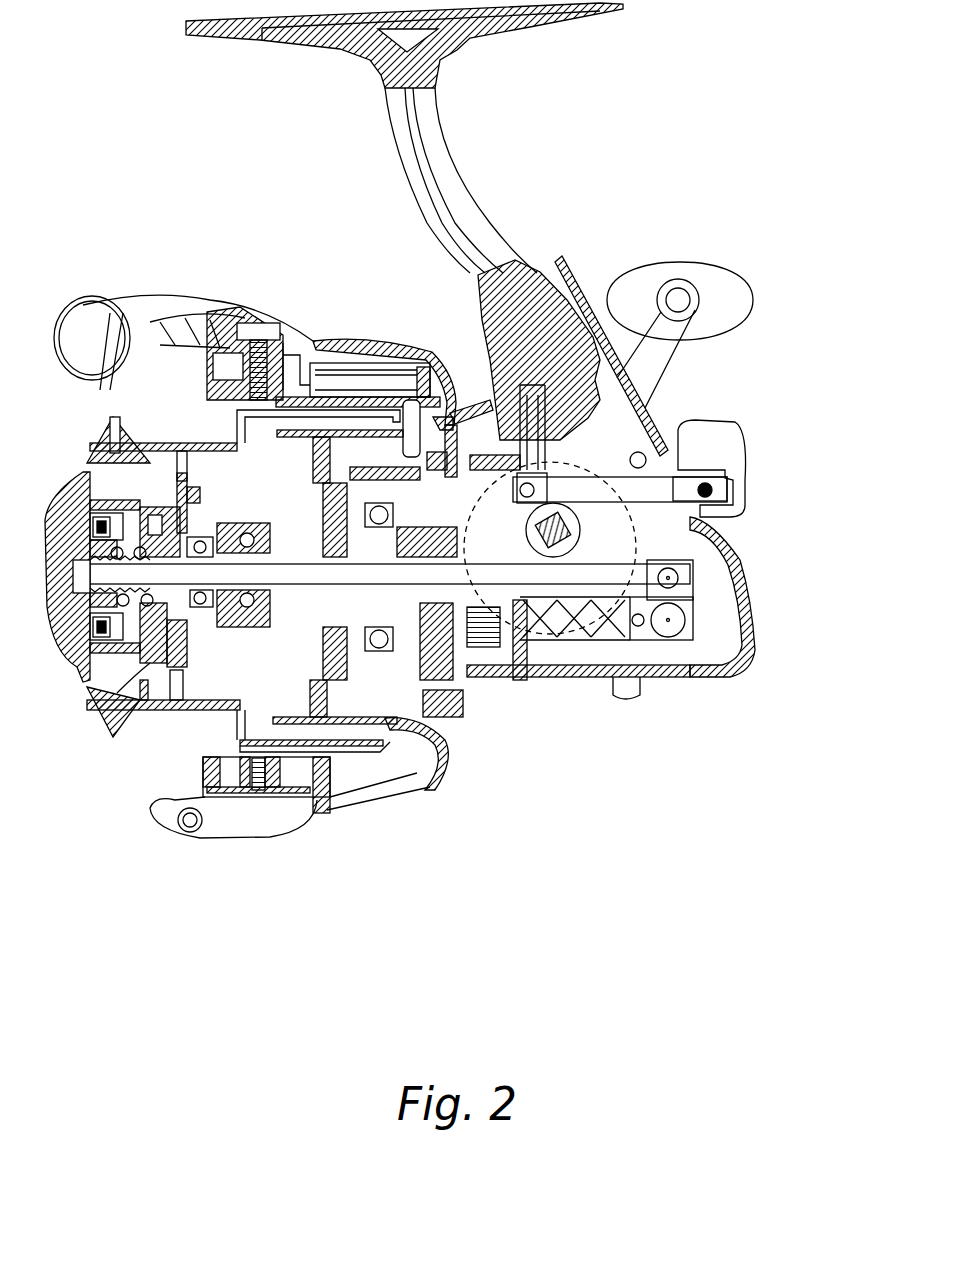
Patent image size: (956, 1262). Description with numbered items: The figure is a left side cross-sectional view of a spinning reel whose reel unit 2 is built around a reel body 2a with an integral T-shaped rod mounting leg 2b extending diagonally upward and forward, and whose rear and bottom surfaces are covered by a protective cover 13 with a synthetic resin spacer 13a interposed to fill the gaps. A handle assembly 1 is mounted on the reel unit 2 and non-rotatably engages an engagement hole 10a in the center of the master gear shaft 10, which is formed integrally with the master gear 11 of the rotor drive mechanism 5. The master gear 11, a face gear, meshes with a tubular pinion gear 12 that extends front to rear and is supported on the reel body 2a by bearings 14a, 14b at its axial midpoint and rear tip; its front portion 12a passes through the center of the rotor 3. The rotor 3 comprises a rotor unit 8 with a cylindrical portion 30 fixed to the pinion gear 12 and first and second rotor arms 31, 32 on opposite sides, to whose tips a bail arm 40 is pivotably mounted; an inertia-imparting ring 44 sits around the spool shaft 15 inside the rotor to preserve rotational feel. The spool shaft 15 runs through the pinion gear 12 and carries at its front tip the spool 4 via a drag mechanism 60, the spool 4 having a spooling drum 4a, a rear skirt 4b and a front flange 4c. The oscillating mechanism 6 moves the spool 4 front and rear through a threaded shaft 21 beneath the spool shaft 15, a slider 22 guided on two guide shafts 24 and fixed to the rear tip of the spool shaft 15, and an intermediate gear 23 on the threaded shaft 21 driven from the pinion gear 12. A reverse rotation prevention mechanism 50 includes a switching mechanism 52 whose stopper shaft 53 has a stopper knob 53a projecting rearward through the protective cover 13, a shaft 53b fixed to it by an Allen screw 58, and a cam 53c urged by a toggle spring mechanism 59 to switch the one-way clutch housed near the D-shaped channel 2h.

The handle assembly 1 is at (733, 272).
The reel unit 2 is at (700, 693).
The reel body 2a is at (567, 302).
The rod mounting leg 2b is at (447, 160).
The channel 2h is at (445, 770).
The rotor 3 is at (437, 787).
The spool 4 is at (150, 716).
The spooling drum 4a is at (180, 445).
The skirt 4b is at (280, 405).
The flange 4c is at (118, 420).
The rotor drive mechanism 5 is at (490, 400).
The oscillating mechanism 6 is at (660, 690).
The rotor unit 8 is at (305, 725).
The master gear shaft 10 is at (668, 562).
The engagement hole 10a is at (706, 523).
The master gear 11 is at (650, 440).
The pinion gear 12 is at (498, 515).
The front portion of pinion gear 12a is at (315, 525).
The protective cover 13 is at (683, 590).
The spacer 13a is at (637, 687).
The bearing 14a is at (443, 693).
The bearing 14b is at (523, 683).
The spool shaft 15 is at (547, 650).
The threaded shaft 21 is at (573, 633).
The slider 22 is at (745, 647).
The intermediate gear 23 is at (480, 650).
The guide shafts 24 is at (613, 647).
The cylindrical portion 30 is at (283, 720).
The first rotor arm 31 is at (328, 370).
The second rotor arm 32 is at (350, 777).
The bail arm 40 is at (83, 385).
The inertia-imparting ring 44 is at (313, 693).
The reverse rotation prevention mechanism 50 is at (383, 720).
The switching mechanism 52 is at (598, 490).
The stopper shaft 53 is at (578, 492).
The stopper knob 53a is at (717, 432).
The shaft 53b is at (593, 340).
The cam 53c is at (437, 392).
The Allen screw 58 is at (713, 477).
The toggle spring mechanism 59 is at (513, 362).
The drag mechanism 60 is at (95, 722).